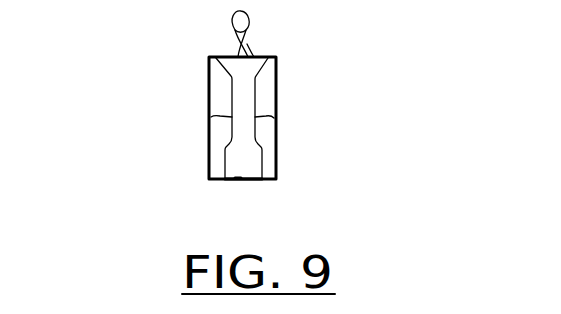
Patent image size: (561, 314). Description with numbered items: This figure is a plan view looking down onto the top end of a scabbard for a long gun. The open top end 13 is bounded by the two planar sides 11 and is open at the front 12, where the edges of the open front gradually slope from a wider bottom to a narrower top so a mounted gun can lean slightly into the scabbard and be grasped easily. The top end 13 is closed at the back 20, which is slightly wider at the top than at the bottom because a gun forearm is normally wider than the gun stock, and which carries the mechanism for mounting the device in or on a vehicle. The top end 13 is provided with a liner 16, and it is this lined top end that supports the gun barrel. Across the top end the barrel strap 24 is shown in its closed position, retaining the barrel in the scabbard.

The planar sides 11 is at (275, 158).
The open front 12 is at (238, 181).
The open top end 13 is at (240, 105).
The liner 16 is at (268, 132).
The back 20 is at (258, 54).
The barrel strap 24 is at (233, 28).